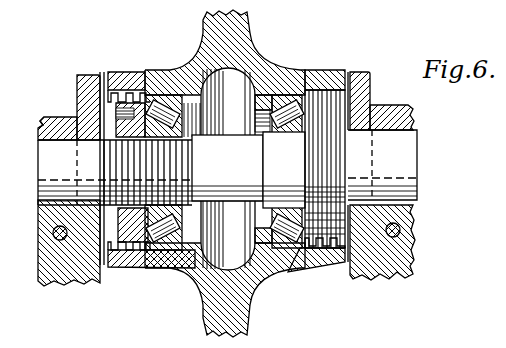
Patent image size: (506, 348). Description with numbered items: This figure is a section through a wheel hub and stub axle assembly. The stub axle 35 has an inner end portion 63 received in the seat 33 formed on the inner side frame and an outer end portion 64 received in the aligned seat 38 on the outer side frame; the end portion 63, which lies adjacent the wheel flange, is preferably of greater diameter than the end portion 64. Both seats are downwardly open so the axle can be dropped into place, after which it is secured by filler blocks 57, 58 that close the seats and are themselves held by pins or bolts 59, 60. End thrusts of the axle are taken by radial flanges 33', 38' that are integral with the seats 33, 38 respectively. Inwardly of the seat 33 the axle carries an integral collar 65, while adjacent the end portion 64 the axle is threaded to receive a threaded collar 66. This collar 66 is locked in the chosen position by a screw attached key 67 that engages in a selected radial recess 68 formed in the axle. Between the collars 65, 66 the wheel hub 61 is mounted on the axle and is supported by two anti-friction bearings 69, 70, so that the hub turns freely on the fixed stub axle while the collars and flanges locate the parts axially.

The seat 33 is at (393, 97).
The radial flange 33' is at (371, 84).
The stub axle 35 is at (232, 180).
The seat 38 is at (57, 109).
The radial flange 38' is at (86, 92).
The filler block 57 is at (408, 253).
The filler block 58 is at (53, 257).
The pin or bolt 59 is at (410, 225).
The pin or bolt 60 is at (52, 233).
The wheel hub 61 is at (263, 62).
The axle end portion 63 is at (410, 156).
The axle end portion 64 is at (47, 160).
The integral collar 65 is at (327, 70).
The threaded collar 66 is at (143, 100).
The screw attached key 67 is at (108, 95).
The radial recess 68 is at (37, 123).
The anti-friction bearing 69 is at (165, 238).
The anti-friction bearing 70 is at (288, 237).